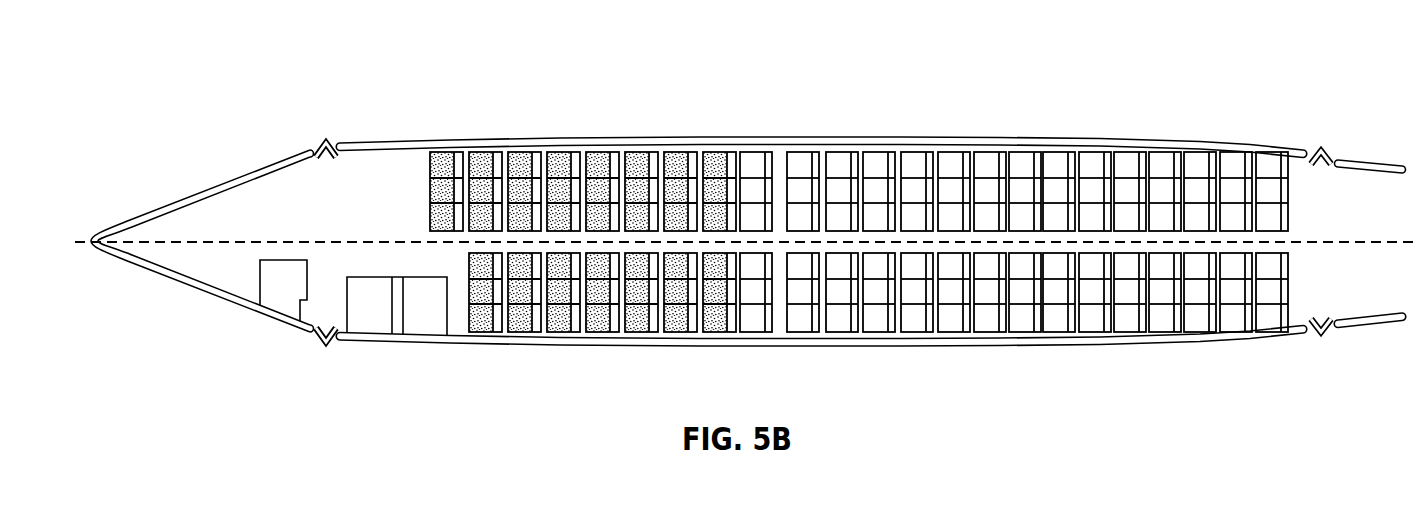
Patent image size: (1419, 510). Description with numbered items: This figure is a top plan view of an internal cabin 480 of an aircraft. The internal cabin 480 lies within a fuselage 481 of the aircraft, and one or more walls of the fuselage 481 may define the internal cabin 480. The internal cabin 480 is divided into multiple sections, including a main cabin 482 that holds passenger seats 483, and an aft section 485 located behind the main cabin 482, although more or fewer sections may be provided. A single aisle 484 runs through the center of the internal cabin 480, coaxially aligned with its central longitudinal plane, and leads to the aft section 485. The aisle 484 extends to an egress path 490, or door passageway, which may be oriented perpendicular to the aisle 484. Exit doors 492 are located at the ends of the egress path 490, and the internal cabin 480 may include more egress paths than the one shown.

The internal cabin 480 is at (358, 83).
The fuselage 481 is at (548, 143).
The main cabin 482 is at (486, 168).
The passenger seats 483 is at (755, 172).
The single aisle 484 is at (878, 237).
The aft section 485 is at (1305, 173).
The egress path 490 is at (1302, 200).
The exit doors 492 is at (1327, 153).